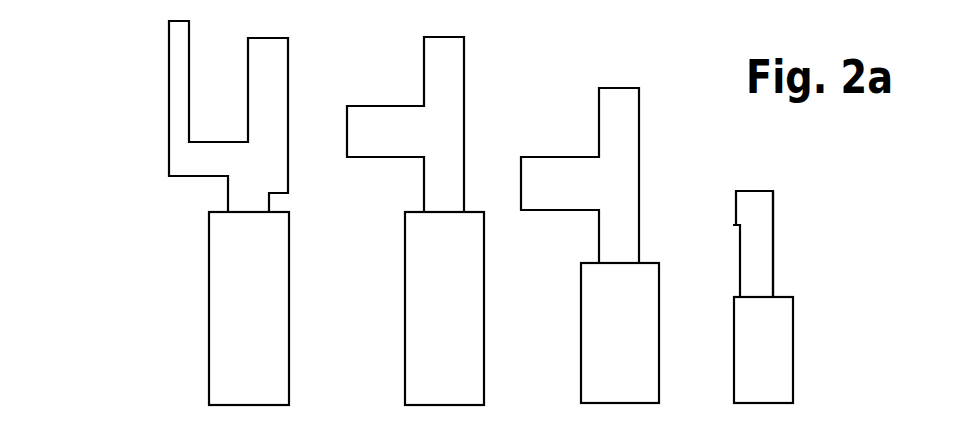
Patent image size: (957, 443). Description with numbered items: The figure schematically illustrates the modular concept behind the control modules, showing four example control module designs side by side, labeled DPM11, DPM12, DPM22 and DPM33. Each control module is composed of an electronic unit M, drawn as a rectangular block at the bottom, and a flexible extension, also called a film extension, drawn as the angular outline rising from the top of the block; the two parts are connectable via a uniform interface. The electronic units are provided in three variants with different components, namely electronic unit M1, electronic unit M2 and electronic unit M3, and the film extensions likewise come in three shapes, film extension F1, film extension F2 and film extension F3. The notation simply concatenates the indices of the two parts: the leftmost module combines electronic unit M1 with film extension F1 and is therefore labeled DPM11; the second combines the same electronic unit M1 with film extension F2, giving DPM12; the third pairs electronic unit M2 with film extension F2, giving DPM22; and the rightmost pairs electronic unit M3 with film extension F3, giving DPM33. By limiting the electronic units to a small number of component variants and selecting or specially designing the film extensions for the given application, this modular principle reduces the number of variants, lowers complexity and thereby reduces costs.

The control module DPM11 is at (146, 52).
The control module DPM12 is at (406, 67).
The control module DPM22 is at (579, 134).
The control module DPM33 is at (722, 171).
The flexible extension F1 is at (178, 173).
The flexible extension F2 is at (367, 150).
The flexible extension F3 is at (767, 230).
The electronic unit M1 is at (249, 308).
The electronic unit M2 is at (620, 333).
The electronic unit M3 is at (763, 350).